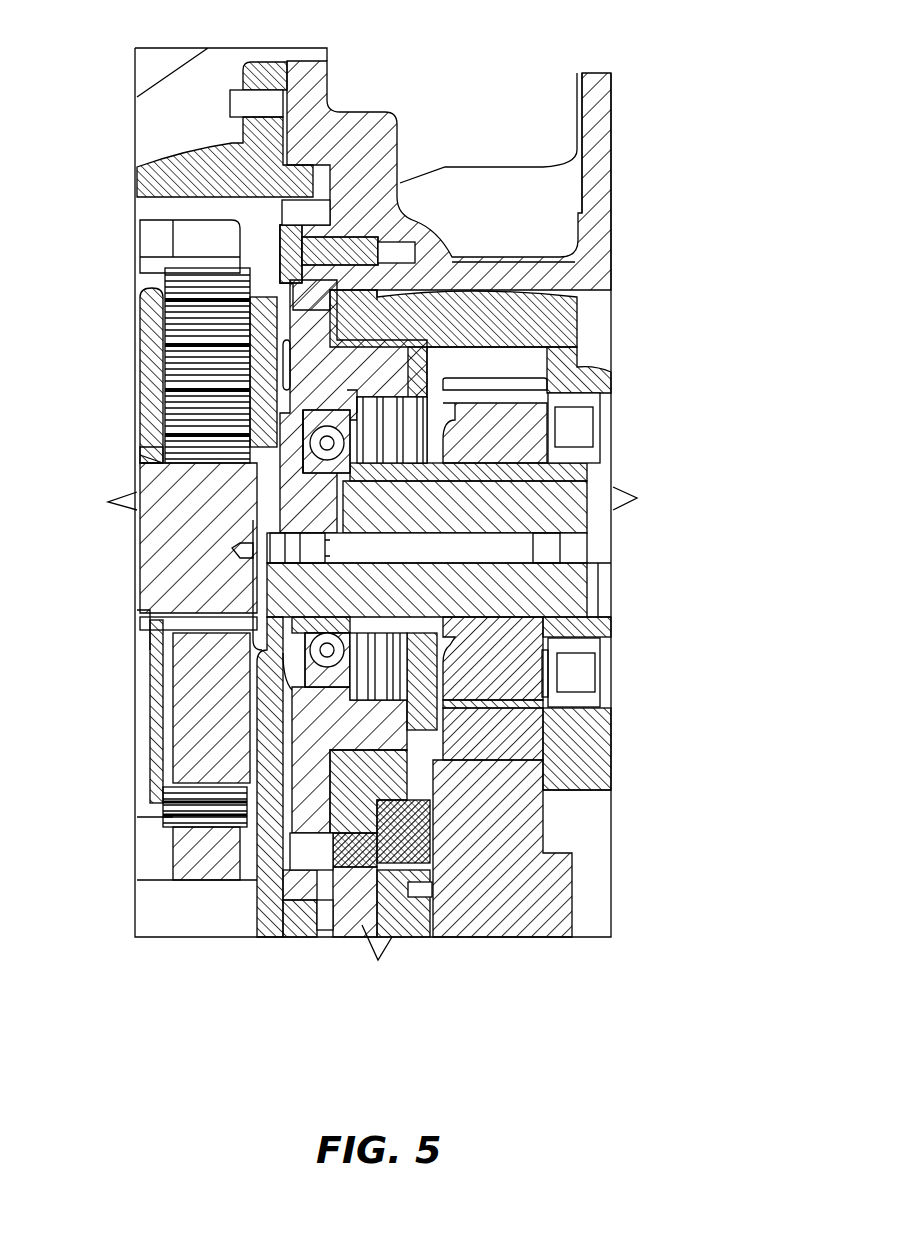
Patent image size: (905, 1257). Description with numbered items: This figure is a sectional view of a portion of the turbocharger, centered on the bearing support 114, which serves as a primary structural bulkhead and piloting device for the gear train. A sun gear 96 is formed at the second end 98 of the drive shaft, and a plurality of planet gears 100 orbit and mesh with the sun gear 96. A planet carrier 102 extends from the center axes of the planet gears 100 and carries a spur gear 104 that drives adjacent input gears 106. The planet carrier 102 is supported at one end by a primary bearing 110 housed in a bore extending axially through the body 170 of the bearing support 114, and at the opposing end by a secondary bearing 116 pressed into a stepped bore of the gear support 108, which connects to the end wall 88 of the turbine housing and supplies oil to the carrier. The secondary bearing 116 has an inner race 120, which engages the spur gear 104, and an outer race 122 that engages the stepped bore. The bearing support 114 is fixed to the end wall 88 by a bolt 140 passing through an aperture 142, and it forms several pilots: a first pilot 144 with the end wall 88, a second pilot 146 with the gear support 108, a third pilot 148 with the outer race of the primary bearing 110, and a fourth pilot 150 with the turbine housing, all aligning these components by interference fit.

The end wall 88 is at (392, 116).
The sun gear 96 is at (157, 513).
The second end 98 is at (155, 582).
The planet gears 100 is at (175, 738).
The planet carrier 102 is at (568, 588).
The spur gear 104 is at (493, 687).
The input gears 106 is at (500, 917).
The gear support 108 is at (587, 380).
The primary bearing 110 is at (323, 443).
The bearing support 114 is at (313, 820).
The secondary bearing 116 is at (575, 672).
The inner race 120 is at (573, 455).
The outer race 122 is at (573, 400).
The bolt 140 is at (428, 220).
The aperture 142 is at (317, 237).
The first pilot 144 is at (520, 263).
The second pilot 146 is at (575, 312).
The third pilot 148 is at (257, 68).
The fourth pilot 150 is at (325, 425).
The body 170 is at (187, 307).